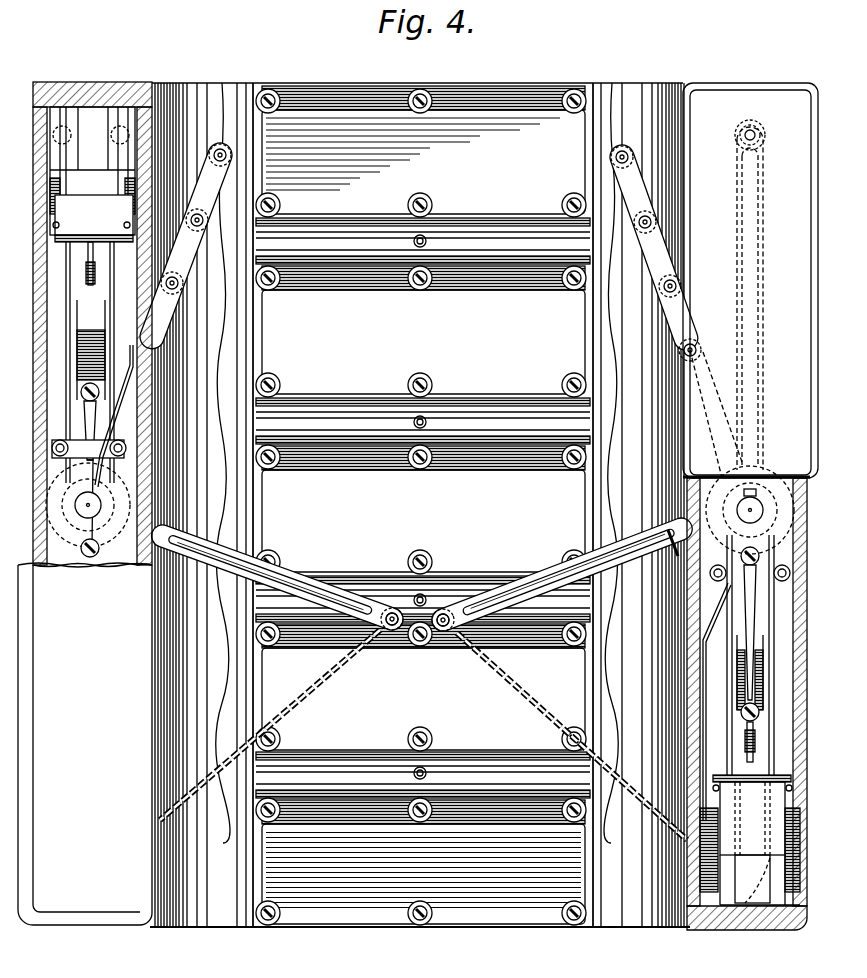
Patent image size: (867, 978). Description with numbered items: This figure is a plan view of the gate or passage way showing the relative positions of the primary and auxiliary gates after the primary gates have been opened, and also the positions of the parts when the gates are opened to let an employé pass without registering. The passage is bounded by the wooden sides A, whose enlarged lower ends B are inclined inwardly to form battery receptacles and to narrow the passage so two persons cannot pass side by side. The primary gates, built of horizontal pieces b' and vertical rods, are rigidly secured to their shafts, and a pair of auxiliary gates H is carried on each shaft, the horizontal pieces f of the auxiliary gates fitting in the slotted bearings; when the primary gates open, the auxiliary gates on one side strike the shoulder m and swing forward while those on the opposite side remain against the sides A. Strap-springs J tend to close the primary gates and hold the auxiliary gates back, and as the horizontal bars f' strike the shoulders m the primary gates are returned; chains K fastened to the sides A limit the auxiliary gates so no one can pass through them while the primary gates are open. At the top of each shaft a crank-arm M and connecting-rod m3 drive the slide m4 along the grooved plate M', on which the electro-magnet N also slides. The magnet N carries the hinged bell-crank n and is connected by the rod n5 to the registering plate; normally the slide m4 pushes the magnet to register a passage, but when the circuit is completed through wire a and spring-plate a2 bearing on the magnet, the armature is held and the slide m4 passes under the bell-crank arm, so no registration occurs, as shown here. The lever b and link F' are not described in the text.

The sides of the gate or passage way A is at (418, 517).
The lower ends of the wooden sides B is at (420, 517).
The auxiliary gates H is at (421, 574).
The strap-springs J is at (300, 564).
The chains K is at (313, 700).
The electro-magnet N is at (425, 506).
The bell-crank n is at (419, 506).
The lever or rod n5 is at (421, 552).
The shoulder m is at (420, 552).
The connecting-rod m3 is at (750, 667).
The slide m4 is at (90, 350).
The crank-arm M is at (413, 515).
The grooved plate M' is at (441, 579).
The wire a is at (419, 508).
The spring-plate a2 is at (792, 890).
The lever arm b is at (186, 246).
The horizontal pieces b' is at (654, 251).
The horizontal pieces f is at (638, 564).
The link F' is at (716, 399).
The horizontal bars f' is at (757, 295).